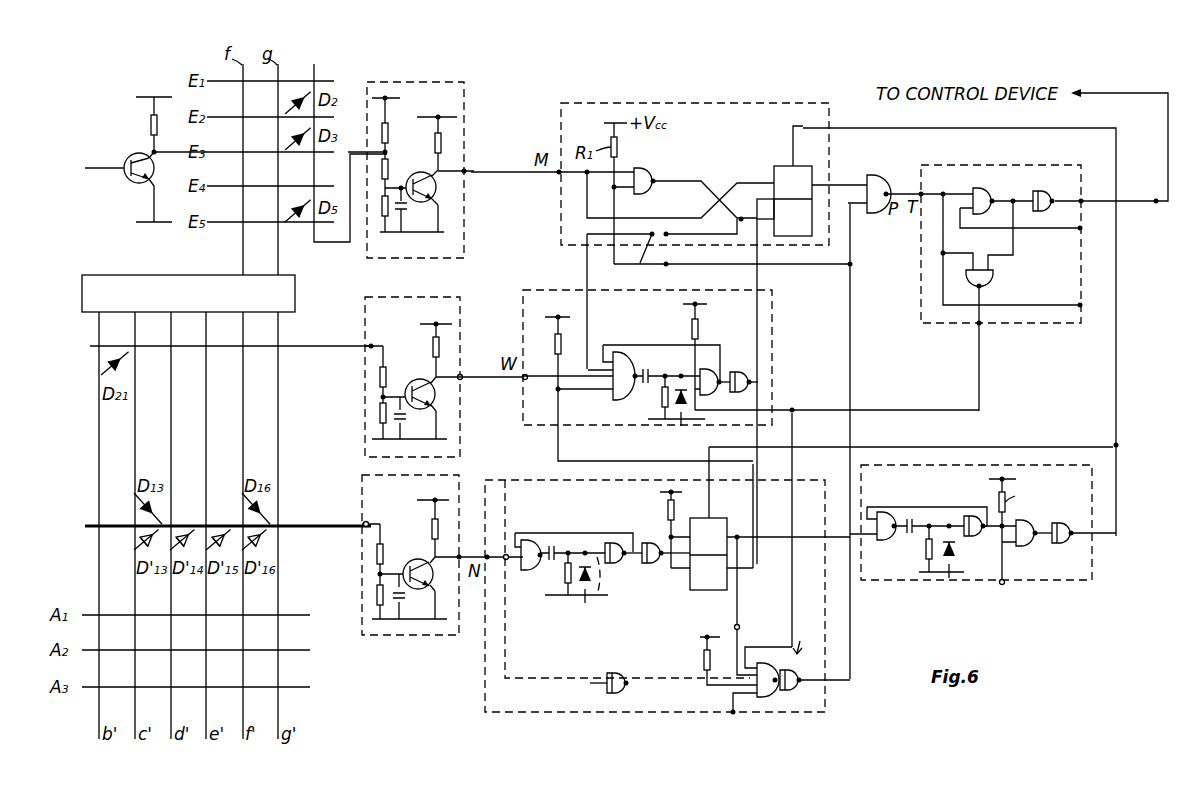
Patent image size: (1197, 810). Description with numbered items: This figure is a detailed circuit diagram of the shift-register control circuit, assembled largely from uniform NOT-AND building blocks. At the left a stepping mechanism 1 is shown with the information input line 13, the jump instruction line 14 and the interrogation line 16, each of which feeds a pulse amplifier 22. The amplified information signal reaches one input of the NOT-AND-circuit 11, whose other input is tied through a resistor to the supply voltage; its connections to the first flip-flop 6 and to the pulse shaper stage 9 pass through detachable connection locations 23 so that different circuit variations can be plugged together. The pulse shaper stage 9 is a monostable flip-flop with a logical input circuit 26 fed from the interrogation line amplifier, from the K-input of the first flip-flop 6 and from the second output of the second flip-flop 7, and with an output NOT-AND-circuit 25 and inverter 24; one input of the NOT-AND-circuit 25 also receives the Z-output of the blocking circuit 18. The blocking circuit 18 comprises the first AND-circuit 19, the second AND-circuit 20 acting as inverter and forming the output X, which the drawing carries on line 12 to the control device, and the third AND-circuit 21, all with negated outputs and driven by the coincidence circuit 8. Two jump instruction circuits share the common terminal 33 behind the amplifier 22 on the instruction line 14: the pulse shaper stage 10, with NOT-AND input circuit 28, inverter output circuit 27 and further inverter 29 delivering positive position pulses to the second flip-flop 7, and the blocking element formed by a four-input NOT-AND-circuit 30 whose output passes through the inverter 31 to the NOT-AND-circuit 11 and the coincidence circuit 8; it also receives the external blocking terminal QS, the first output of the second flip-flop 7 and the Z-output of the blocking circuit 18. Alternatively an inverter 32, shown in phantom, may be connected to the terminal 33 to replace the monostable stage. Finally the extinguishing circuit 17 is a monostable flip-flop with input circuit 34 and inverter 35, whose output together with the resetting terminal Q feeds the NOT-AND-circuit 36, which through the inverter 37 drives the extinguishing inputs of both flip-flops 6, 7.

The stepping mechanism 1 is at (293, 282).
The first flip-flop FF1 6 is at (800, 164).
The second flip-flop FF2 7 is at (667, 609).
The coincidence circuit 8 is at (873, 176).
The pulse shaper stage 9 is at (671, 375).
The pulse shaper stage 10 is at (570, 550).
The NOT-AND-circuit 11 is at (649, 167).
The output line to control device 12 is at (1143, 208).
The information input line 13 is at (312, 66).
The jump instruction line 14 is at (318, 527).
The interrogation line 16 is at (316, 348).
The extinguishing circuit 17 is at (983, 538).
The blocking circuit 18 is at (995, 162).
The first AND-circuit 19 is at (982, 190).
The second AND-circuit 20 is at (1041, 190).
The third AND-circuit 21 is at (990, 275).
The pulse amplifier 22 is at (462, 84).
The detachable connection locations 23 is at (714, 188).
The inverter 24 is at (762, 384).
The NOT-AND-circuit 25 is at (710, 396).
The logical input circuit 26 is at (618, 398).
The output circuit inverter 27 is at (620, 565).
The input circuit NOT-AND-circuit 28 is at (526, 565).
The further inverter 29 is at (655, 565).
The NOT-AND-circuit 30 is at (776, 686).
The inverter 31 is at (802, 666).
The inverter 32 is at (612, 665).
The common terminal 33 is at (504, 553).
The input circuit 34 is at (888, 541).
The inverter 35 is at (984, 541).
The NOT-AND-circuit 36 is at (1031, 518).
The inverter 37 is at (1062, 508).